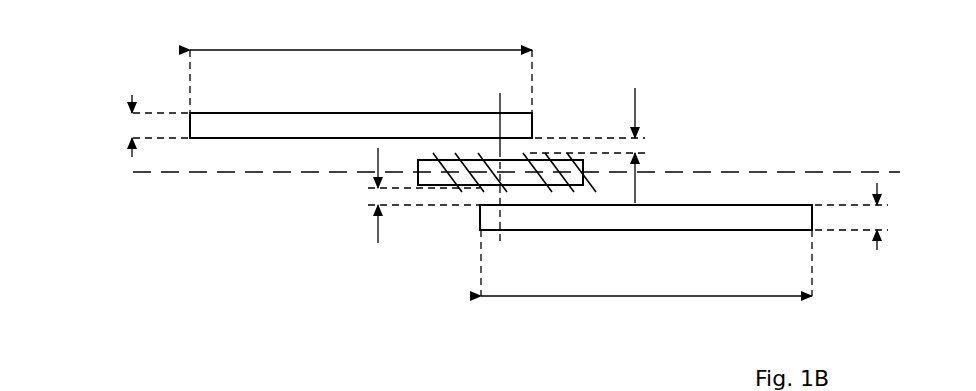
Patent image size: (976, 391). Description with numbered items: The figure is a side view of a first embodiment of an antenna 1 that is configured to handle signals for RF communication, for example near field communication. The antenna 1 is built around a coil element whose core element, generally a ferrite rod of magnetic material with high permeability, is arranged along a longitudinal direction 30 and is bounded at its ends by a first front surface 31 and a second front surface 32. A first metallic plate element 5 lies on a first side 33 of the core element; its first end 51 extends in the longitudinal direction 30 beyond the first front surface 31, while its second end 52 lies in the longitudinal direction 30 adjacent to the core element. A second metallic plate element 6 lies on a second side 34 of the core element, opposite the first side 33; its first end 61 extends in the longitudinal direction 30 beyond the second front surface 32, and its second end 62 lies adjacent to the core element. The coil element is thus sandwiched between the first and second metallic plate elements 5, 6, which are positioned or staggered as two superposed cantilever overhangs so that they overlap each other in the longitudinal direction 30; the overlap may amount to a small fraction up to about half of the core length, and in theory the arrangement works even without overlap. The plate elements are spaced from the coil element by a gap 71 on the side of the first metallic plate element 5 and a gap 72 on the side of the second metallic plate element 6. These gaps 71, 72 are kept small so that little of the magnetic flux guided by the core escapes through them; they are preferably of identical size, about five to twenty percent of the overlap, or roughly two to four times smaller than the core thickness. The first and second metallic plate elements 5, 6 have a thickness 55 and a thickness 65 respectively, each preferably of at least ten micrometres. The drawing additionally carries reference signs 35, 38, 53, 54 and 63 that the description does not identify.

The antenna 1 is at (92, 63).
The first metallic plate element 5 is at (277, 112).
The second metallic plate element 6 is at (765, 232).
The longitudinal direction 30 is at (855, 170).
The first front surface 31 is at (418, 170).
The second front surface 32 is at (583, 173).
The first side 33 is at (461, 156).
The second side 34 is at (538, 187).
The intermediate element 35 is at (513, 183).
The axis 38 is at (500, 93).
The first end 51 is at (533, 123).
The second end 52 is at (190, 117).
The length of first plate 53 is at (353, 47).
The width of first plate 54 is at (391, 388).
The thickness 55 is at (127, 127).
The first end 61 is at (480, 218).
The second end 62 is at (813, 213).
The length of second plate 63 is at (665, 298).
The thickness 65 is at (877, 217).
The gap 71 is at (642, 143).
The gap 72 is at (372, 198).